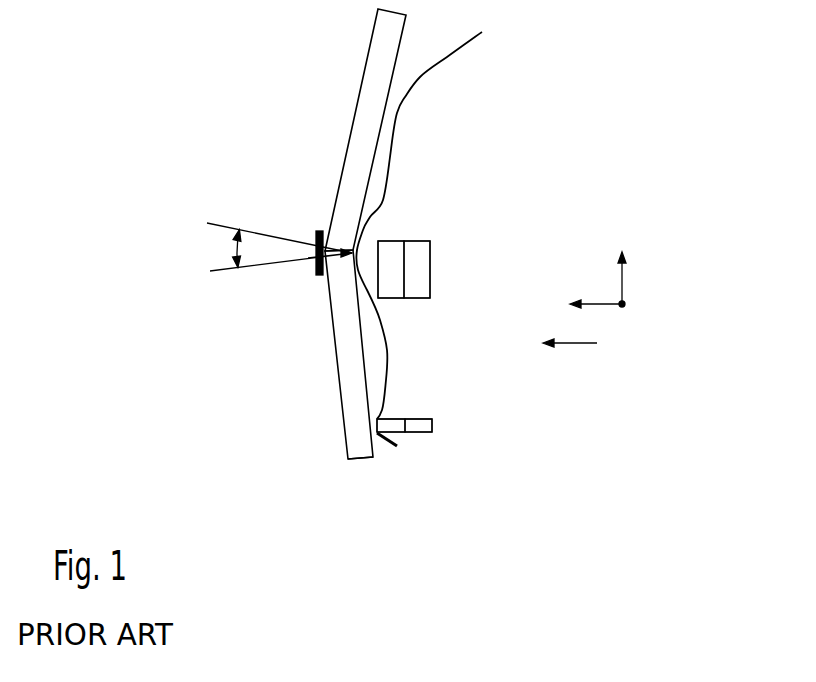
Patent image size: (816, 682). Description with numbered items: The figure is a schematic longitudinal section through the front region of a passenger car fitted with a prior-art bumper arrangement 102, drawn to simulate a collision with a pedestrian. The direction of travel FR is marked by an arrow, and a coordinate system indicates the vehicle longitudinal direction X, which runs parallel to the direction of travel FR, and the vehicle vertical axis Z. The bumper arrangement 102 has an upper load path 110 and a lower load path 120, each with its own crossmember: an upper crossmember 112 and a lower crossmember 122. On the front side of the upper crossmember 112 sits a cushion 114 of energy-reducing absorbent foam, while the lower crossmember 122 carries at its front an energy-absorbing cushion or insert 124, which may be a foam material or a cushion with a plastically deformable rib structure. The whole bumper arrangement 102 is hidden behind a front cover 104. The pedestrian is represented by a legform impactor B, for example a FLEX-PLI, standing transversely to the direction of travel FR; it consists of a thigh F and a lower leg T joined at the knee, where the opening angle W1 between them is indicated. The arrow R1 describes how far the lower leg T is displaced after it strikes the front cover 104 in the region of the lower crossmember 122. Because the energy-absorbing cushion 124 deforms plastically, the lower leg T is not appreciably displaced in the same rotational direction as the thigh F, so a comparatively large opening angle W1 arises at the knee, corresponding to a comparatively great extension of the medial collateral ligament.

The thigh F is at (358, 103).
The lower leg T is at (333, 345).
The legform impactor B is at (263, 440).
The opening angle W1 is at (228, 250).
The arrow describing displacement of the lower leg R1 is at (296, 413).
The upper load path 110 is at (467, 232).
The upper crossmember 112 is at (420, 241).
The cushion 114 is at (392, 241).
The lower load path 120 is at (457, 412).
The lower crossmember 122 is at (422, 430).
The energy-absorbing cushion or insert 124 is at (396, 427).
The front cover 104 is at (385, 446).
The bumper arrangement 102 is at (427, 487).
The vehicle longitudinal direction X is at (589, 304).
The vehicle vertical axis Z is at (620, 260).
The direction of travel FR is at (584, 342).